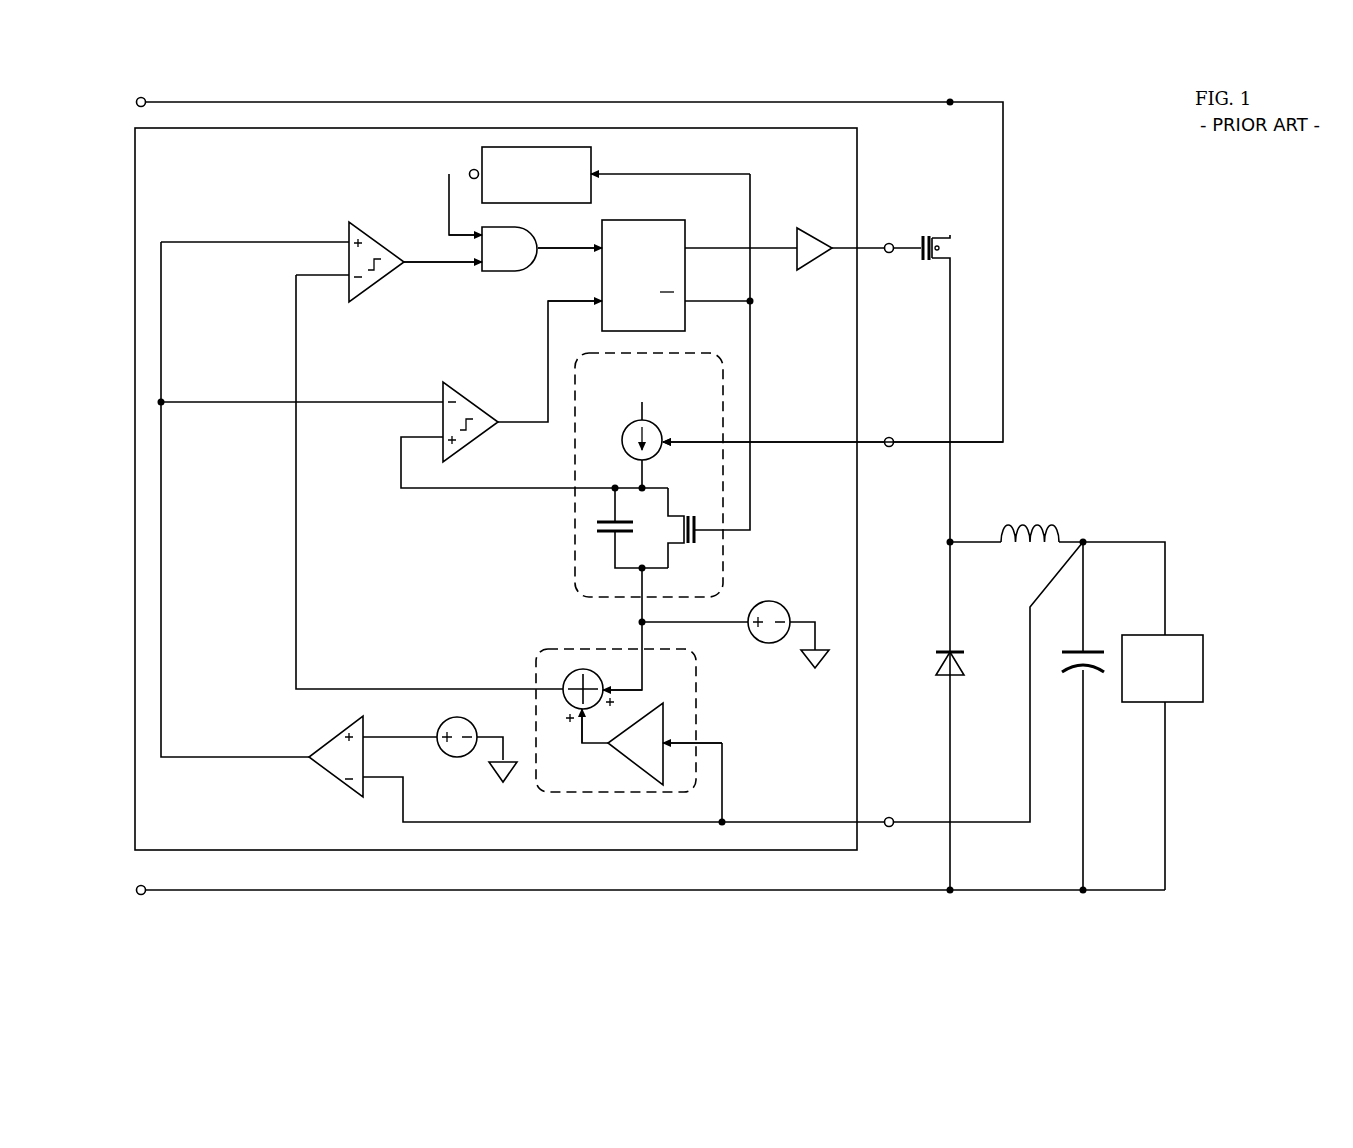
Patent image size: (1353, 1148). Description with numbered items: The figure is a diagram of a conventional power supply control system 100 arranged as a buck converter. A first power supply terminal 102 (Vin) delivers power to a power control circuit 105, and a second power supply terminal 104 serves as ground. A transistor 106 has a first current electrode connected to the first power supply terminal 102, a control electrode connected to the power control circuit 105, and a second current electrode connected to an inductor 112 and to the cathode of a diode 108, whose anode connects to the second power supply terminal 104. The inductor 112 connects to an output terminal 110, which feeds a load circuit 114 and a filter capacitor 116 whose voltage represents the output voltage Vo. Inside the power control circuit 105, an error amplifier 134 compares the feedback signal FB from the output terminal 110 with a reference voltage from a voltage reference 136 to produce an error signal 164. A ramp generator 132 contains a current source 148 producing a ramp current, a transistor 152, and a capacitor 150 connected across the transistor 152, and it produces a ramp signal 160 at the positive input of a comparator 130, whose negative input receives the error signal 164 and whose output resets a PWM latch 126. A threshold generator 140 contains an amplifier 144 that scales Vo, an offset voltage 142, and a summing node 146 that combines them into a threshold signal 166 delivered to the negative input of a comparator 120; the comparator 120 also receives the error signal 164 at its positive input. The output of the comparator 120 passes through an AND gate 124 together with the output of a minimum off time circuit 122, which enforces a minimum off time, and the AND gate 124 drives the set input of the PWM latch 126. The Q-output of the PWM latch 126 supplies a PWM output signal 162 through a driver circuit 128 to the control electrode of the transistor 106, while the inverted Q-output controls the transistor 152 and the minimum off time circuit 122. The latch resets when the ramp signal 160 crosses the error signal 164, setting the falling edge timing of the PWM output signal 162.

The power supply control system 100 is at (1097, 195).
The first power supply terminal 102 is at (239, 104).
The second power supply terminal 104 is at (239, 892).
The power control circuit 105 is at (135, 304).
The transistor 106 is at (948, 240).
The diode 108 is at (948, 648).
The output terminal 110 is at (1120, 542).
The inductor 112 is at (1019, 523).
The load circuit 114 is at (1184, 635).
The filter capacitor 116 is at (1066, 650).
The comparator 120 is at (372, 234).
The minimum off time circuit 122 is at (593, 161).
The AND gate 124 is at (508, 274).
The PWM latch 126 is at (653, 218).
The driver circuit 128 is at (812, 231).
The comparator 130 is at (474, 399).
The ramp generator 132 is at (570, 544).
The error amplifier 134 is at (326, 739).
The voltage reference 136 is at (452, 757).
The threshold generator 140 is at (697, 720).
The offset voltage 142 is at (768, 644).
The amplifier 144 is at (667, 711).
The summing node 146 is at (560, 679).
The current source 148 is at (622, 442).
The capacitor 150 is at (610, 538).
The transistor 152 is at (687, 513).
The ramp signal 160 is at (530, 514).
The PWM output signal 162 is at (745, 282).
The error signal 164 is at (245, 790).
The threshold signal 166 is at (400, 683).